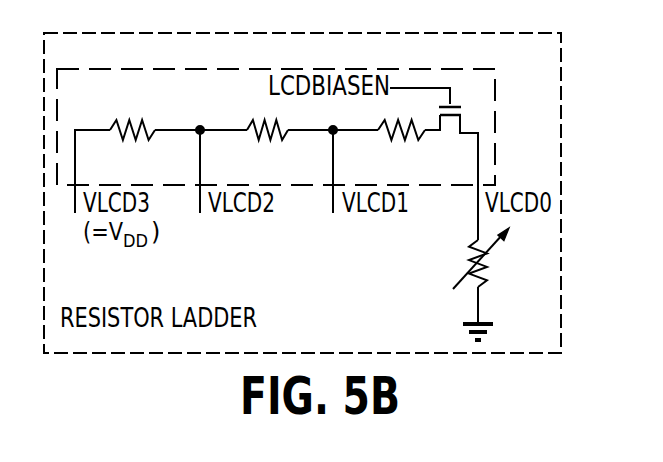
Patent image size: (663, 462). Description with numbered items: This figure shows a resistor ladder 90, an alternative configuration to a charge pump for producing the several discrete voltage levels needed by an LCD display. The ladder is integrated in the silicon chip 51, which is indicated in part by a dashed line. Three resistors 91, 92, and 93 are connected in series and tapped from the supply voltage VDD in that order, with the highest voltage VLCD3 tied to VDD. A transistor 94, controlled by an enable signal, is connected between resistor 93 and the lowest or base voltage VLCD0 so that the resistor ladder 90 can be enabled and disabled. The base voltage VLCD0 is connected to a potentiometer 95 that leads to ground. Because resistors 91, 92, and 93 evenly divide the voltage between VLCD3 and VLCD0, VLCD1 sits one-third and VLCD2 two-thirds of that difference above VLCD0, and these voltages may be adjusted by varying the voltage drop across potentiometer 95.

The resistor ladder 90 is at (301, 331).
The chip 51 is at (496, 141).
The resistor 91 is at (117, 142).
The resistor 92 is at (250, 142).
The resistor 93 is at (385, 142).
The transistor 94 is at (461, 113).
The potentiometer 95 is at (481, 287).